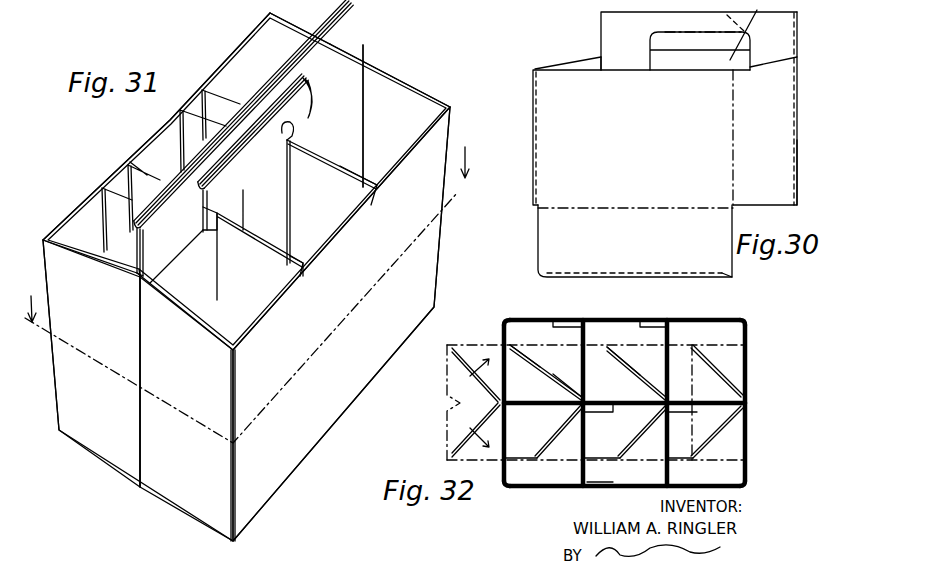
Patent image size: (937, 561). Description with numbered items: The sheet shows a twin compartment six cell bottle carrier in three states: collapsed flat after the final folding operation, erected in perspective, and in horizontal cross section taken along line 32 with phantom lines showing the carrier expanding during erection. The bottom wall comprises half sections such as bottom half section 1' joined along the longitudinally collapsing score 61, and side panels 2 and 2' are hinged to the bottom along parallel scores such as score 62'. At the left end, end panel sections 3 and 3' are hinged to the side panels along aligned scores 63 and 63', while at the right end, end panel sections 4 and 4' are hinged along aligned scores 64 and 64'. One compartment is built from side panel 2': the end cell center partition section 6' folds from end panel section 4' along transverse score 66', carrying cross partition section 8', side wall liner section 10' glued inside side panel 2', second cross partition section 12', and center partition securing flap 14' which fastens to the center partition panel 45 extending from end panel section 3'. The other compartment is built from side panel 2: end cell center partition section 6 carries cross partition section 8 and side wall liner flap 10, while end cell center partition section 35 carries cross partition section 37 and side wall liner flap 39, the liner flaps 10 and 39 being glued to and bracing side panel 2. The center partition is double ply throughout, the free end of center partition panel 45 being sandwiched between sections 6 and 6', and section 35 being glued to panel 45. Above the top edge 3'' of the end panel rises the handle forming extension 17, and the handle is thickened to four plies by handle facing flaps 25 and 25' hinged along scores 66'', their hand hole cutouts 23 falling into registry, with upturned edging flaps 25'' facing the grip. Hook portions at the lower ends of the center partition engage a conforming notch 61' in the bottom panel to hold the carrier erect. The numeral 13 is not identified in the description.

In FIG. 30, the bottom half section 1' is at (635, 241).
In FIG. 31, the side panel 2 is at (156, 126).
In FIG. 32, the side panel 2 is at (625, 306).
In FIG. 31, the side panel 2' is at (341, 324).
In FIG. 30, the side panel 2' is at (641, 137).
In FIG. 32, the side panel 2' is at (625, 499).
In FIG. 31, the end panel section 3 is at (91, 363).
In FIG. 32, the end panel section 3 is at (473, 387).
In FIG. 31, the end panel section 3' is at (186, 409).
In FIG. 30, the end panel section 3' is at (567, 52).
In FIG. 32, the end panel section 3' is at (510, 502).
In FIG. 30, the top edge of end panel section 3'' is at (582, 52).
In FIG. 31, the end panel section 4 is at (300, 22).
In FIG. 32, the end panel section 4 is at (760, 364).
In FIG. 31, the end panel section 4' is at (390, 75).
In FIG. 30, the end panel section 4' is at (765, 108).
In FIG. 32, the end panel section 4' is at (762, 442).
In FIG. 31, the end cell center partition section 6 is at (273, 139).
In FIG. 32, the end cell center partition section 6 is at (702, 402).
In FIG. 31, the end cell center partition section 6' is at (389, 109).
In FIG. 32, the end cell center partition section 6' is at (693, 434).
In FIG. 31, the cross partition section 8 is at (221, 92).
In FIG. 32, the cross partition section 8 is at (706, 371).
In FIG. 31, the cross partition section 8' is at (341, 176).
In FIG. 32, the cross partition section 8' is at (705, 431).
In FIG. 31, the side wall liner flap 10 is at (192, 130).
In FIG. 32, the side wall liner flap 10 is at (631, 351).
In FIG. 31, the side wall liner section 10' is at (362, 204).
In FIG. 32, the side wall liner section 10' is at (613, 471).
In FIG. 31, the cross partition section 12' is at (315, 274).
In FIG. 32, the cross partition section 12' is at (543, 470).
In FIG. 31, the partition panel 13 is at (427, 6).
In FIG. 31, the center partition securing flap 14' is at (260, 245).
In FIG. 32, the center partition securing flap 14' is at (625, 431).
In FIG. 31, the handle forming extension 17 is at (130, 262).
In FIG. 30, the hand hole cutout 23 is at (747, 30).
In FIG. 31, the handle facing flap 25 is at (207, 138).
In FIG. 31, the handle facing flap 25' is at (183, 236).
In FIG. 30, the handle facing flap 25' is at (682, 41).
In FIG. 31, the hand grip edging flap 25'' is at (268, 120).
In FIG. 30, the hand grip edging flap 25'' is at (700, 51).
In FIG. 31, the section line 32 is at (248, 295).
In FIG. 32, the end cell center partition section 35 is at (540, 385).
In FIG. 31, the cross partition section 37 is at (135, 150).
In FIG. 32, the cross partition section 37 is at (583, 357).
In FIG. 31, the side wall liner flap 39 is at (118, 182).
In FIG. 32, the side wall liner flap 39 is at (565, 329).
In FIG. 31, the center partition panel 45 is at (283, 195).
In FIG. 32, the center partition panel 45 is at (547, 412).
In FIG. 30, the longitudinally collapsing score 61 is at (749, 281).
In FIG. 30, the notch 61' is at (612, 266).
In FIG. 30, the score 62' is at (635, 197).
In FIG. 32, the score 63 is at (614, 388).
In FIG. 30, the score 63' is at (518, 137).
In FIG. 32, the score 63' is at (525, 469).
In FIG. 32, the score 64 is at (764, 313).
In FIG. 30, the score 64' is at (715, 137).
In FIG. 32, the score 64' is at (769, 475).
In FIG. 30, the transverse score 66' is at (776, 172).
In FIG. 30, the transverse score 66'' is at (773, 109).